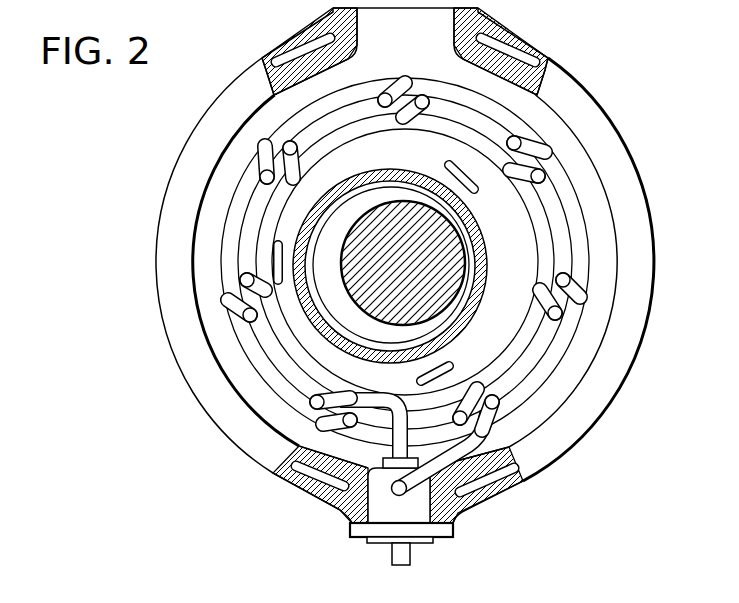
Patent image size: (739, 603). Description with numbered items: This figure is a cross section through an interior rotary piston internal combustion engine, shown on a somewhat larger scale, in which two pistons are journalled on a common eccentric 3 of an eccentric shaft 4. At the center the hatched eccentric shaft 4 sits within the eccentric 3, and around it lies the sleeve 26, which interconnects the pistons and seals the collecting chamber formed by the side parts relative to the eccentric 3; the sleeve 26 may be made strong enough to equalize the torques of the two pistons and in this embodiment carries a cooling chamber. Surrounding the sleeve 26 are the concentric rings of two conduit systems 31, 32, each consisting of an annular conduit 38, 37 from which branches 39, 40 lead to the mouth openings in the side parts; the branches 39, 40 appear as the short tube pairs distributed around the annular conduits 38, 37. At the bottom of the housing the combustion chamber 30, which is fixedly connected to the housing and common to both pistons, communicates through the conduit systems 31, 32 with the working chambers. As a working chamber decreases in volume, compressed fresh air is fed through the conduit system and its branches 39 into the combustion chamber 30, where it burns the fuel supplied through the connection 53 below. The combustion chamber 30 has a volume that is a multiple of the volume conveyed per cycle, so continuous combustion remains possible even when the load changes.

The eccentric 3 is at (334, 281).
The eccentric shaft 4 is at (430, 297).
The sleeve 26 is at (483, 272).
The combustion chamber 30 is at (449, 533).
The conduit system 31 is at (440, 468).
The conduit system 32 is at (396, 413).
The annular conduit 37 is at (277, 393).
The annular conduit 38 is at (290, 350).
The branches 39 is at (262, 176).
The branches 40 is at (290, 146).
The connection 53 is at (393, 553).